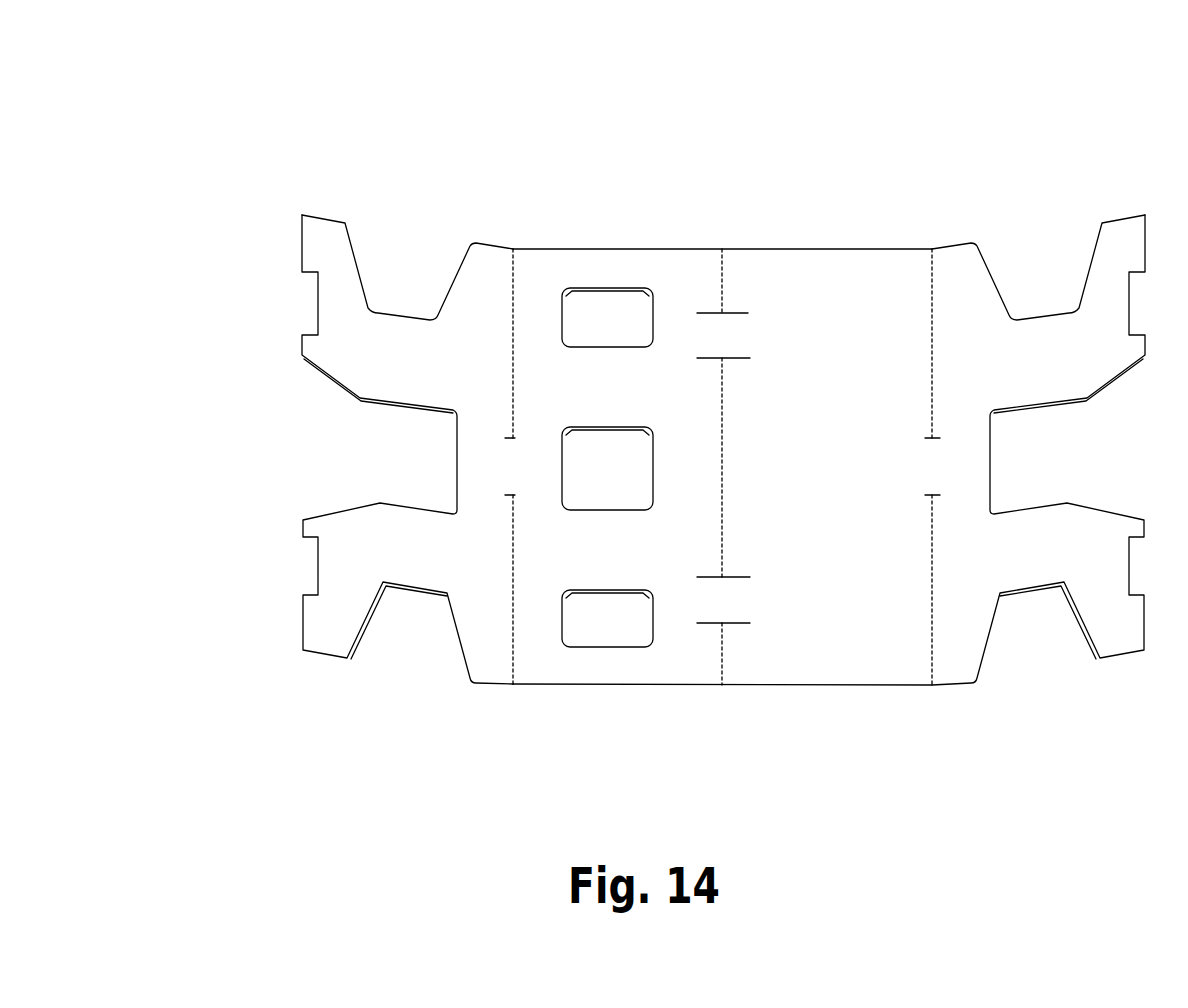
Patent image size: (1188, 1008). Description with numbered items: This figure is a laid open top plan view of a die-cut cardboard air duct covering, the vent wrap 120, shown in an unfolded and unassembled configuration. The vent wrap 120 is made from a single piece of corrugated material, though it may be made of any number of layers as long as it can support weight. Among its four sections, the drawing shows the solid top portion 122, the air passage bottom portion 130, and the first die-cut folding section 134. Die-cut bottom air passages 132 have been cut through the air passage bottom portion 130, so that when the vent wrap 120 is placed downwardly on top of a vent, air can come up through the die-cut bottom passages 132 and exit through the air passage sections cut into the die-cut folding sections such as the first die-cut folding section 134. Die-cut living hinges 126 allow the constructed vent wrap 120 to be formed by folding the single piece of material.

The vent wrap 120 is at (262, 196).
The solid top portion 122 is at (838, 482).
The die-cut living hinges 126 is at (733, 333).
The air passage bottom portion 130 is at (538, 547).
The die-cut bottom air passages 132 is at (618, 482).
The first die-cut folding section 134 is at (427, 560).